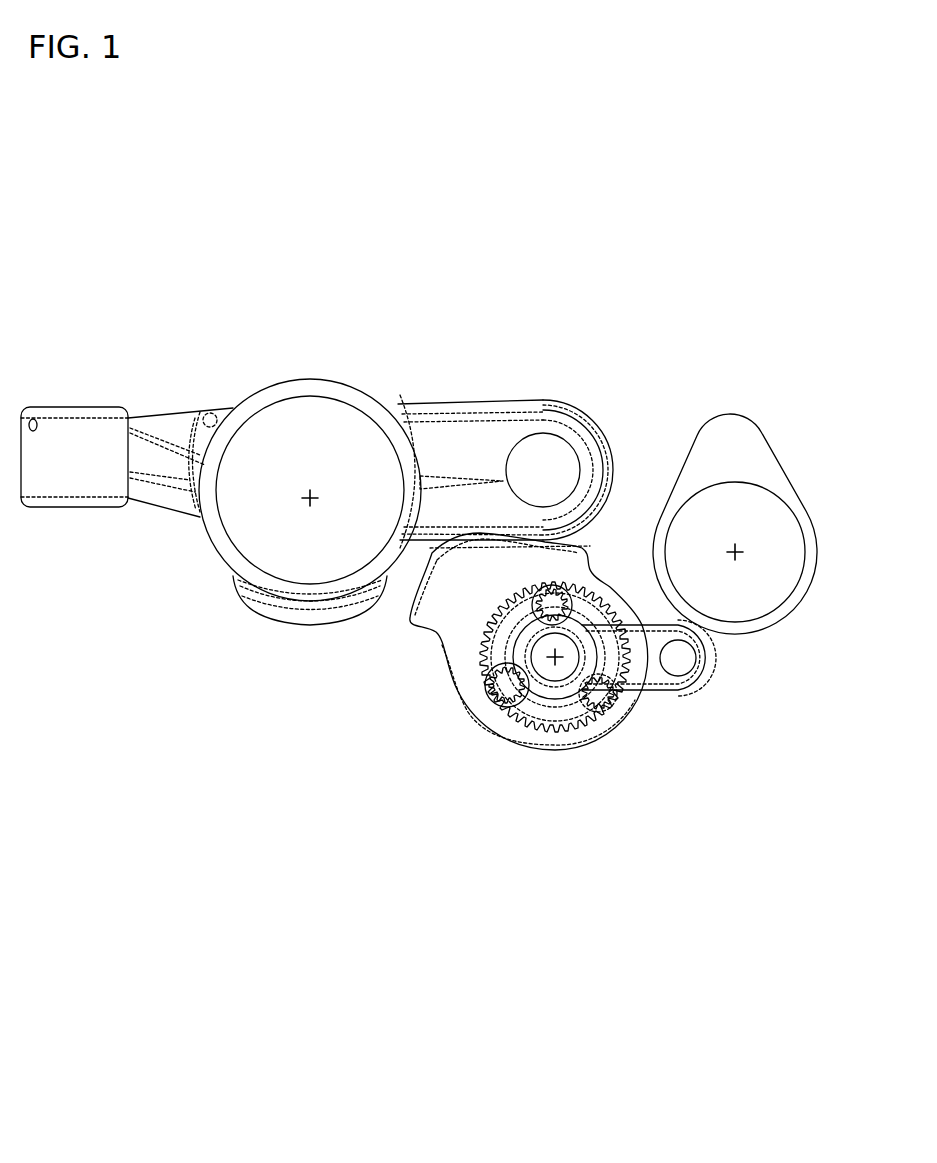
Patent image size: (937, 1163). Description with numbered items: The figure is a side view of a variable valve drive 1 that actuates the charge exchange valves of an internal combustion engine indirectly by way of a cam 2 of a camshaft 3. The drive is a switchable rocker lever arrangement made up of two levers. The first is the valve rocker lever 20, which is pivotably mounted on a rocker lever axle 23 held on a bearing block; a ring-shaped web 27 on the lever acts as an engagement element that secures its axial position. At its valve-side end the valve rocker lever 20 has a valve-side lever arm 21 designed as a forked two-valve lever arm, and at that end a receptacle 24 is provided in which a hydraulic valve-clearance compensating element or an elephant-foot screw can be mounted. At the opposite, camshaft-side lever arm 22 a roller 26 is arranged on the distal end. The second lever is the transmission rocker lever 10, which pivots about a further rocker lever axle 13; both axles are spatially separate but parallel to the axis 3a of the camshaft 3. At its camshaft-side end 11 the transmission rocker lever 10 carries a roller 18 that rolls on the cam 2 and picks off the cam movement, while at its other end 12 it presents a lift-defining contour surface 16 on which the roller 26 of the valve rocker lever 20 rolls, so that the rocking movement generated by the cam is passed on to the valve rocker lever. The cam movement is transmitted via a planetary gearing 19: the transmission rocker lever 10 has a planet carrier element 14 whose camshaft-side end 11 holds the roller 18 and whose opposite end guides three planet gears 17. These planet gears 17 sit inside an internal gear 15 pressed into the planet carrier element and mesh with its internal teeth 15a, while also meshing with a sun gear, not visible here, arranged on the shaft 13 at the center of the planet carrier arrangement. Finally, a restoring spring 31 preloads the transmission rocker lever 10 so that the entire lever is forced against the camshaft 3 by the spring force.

The variable valve drive 1 is at (397, 162).
The cam 2 is at (719, 445).
The camshaft 3 is at (751, 540).
The axis of the camshaft 3a is at (735, 550).
The transmission rocker lever 10 is at (507, 776).
The camshaft-side end 11 is at (680, 657).
The other end 12 is at (517, 557).
The rocker lever axle 13 is at (555, 662).
The planet carrier element 14 is at (616, 660).
The internal gear 15 is at (480, 630).
The internal teeth 15a is at (482, 663).
The contour surface 16 is at (558, 545).
The planet gears 17 is at (575, 607).
The roller 18 is at (717, 645).
The planetary gearing 19 is at (572, 718).
The valve rocker lever 20 is at (318, 352).
The valve-side lever arm 21 is at (178, 413).
The camshaft-side lever arm 22 is at (463, 442).
The rocker lever axle 23 is at (311, 493).
The receptacle 24 is at (60, 425).
The roller 26 is at (556, 400).
The ring-shaped web 27 is at (296, 616).
The restoring spring 31 is at (565, 647).